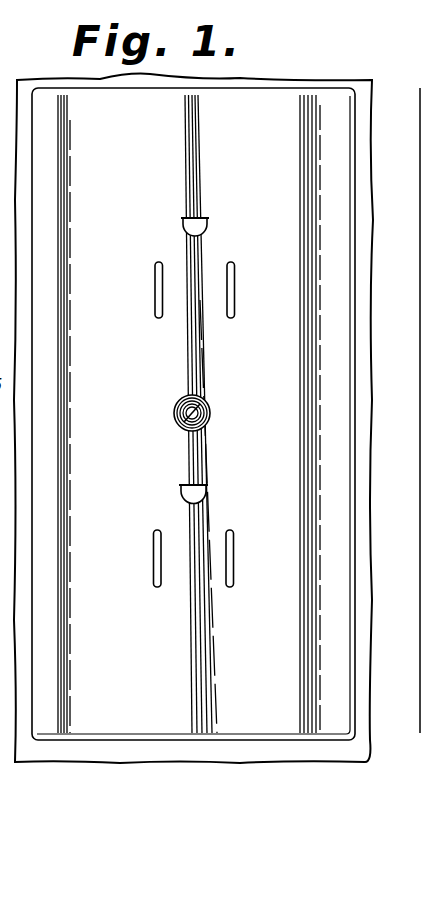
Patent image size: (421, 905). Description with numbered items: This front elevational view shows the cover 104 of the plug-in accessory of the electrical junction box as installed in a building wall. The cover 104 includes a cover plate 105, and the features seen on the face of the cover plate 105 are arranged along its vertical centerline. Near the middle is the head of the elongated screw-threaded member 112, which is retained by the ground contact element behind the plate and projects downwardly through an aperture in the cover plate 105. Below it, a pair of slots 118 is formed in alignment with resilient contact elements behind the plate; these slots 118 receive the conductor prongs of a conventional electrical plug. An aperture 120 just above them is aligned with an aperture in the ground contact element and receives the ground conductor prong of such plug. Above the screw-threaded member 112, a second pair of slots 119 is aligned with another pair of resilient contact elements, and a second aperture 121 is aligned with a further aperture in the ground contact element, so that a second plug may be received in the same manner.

The cover 104 is at (359, 703).
The cover plate 105 is at (205, 675).
The screw-threaded member 112 is at (211, 413).
The slots 118 is at (225, 578).
The second pair of slots 119 is at (226, 312).
The aperture 120 is at (207, 490).
The second aperture 121 is at (208, 222).